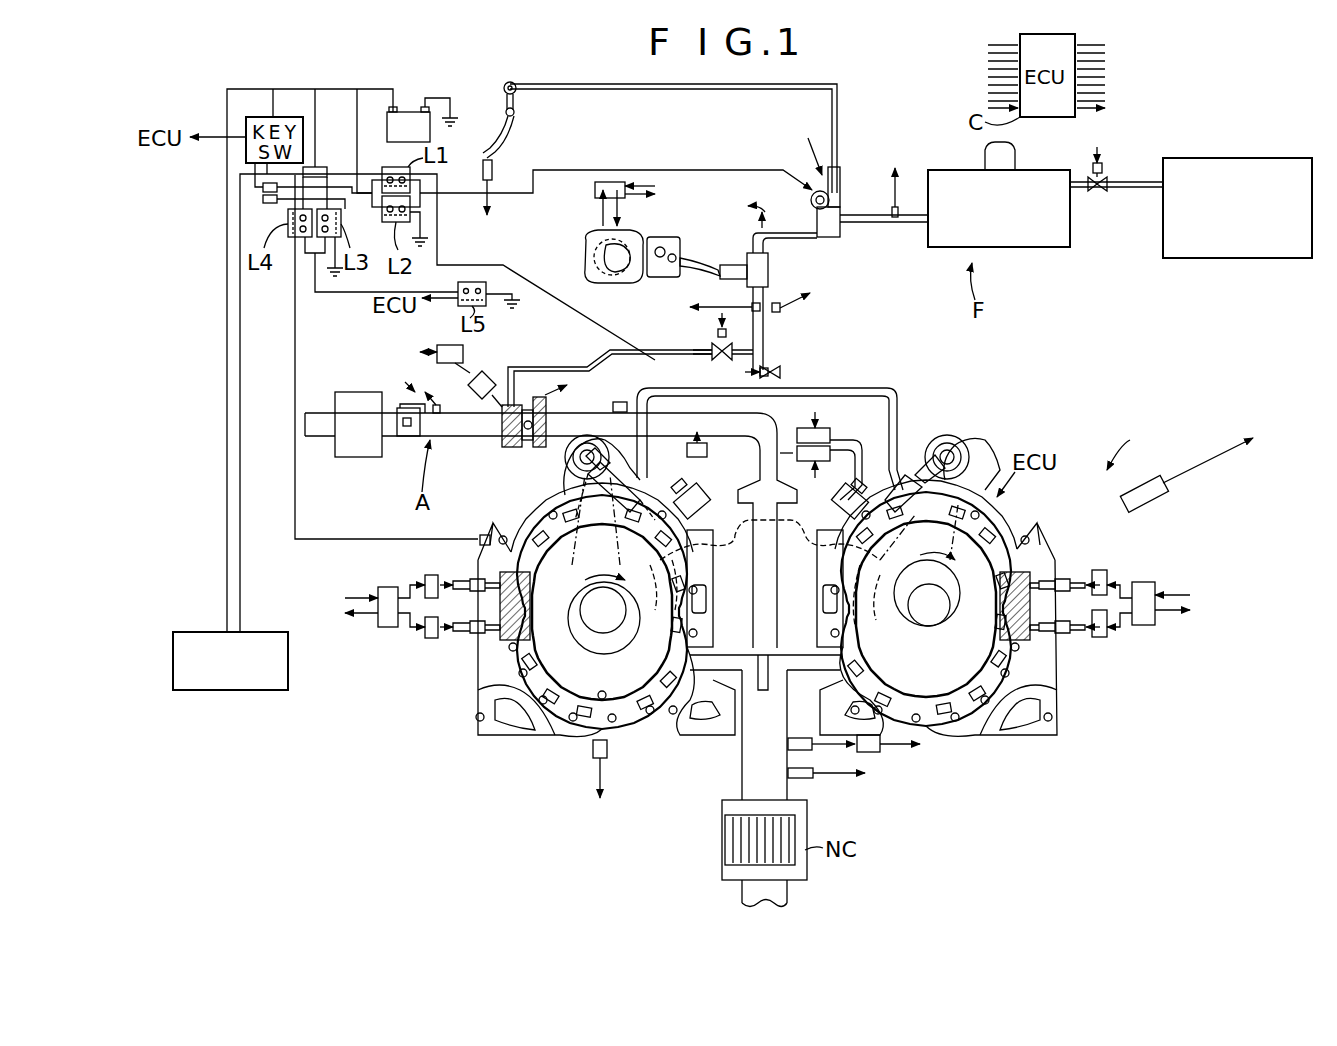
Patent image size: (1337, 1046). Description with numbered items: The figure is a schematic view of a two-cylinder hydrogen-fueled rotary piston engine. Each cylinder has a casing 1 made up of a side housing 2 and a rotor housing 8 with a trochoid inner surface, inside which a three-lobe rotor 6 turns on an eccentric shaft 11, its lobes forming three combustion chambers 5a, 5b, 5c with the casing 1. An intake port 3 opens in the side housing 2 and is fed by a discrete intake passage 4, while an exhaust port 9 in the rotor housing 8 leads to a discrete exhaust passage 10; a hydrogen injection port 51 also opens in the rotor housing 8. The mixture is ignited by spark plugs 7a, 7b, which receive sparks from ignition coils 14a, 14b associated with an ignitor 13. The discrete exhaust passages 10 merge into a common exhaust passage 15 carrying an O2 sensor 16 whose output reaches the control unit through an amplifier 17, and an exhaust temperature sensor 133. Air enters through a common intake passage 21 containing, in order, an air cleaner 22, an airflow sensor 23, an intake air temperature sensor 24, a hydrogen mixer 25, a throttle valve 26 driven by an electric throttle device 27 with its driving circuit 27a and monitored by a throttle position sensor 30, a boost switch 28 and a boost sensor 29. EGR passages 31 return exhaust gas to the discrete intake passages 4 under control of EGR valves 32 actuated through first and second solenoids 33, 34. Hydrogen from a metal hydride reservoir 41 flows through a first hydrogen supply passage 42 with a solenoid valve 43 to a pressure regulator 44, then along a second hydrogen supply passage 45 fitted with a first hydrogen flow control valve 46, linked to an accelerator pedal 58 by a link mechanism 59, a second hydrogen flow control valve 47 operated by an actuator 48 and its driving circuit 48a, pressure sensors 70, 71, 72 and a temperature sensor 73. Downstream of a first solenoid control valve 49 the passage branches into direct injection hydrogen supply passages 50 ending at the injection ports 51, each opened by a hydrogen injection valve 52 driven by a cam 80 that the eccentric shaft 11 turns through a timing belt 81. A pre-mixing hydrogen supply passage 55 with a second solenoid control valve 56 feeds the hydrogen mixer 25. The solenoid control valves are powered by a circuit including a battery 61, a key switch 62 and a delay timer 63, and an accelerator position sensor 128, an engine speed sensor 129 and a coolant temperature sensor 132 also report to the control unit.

The casing 1 is at (478, 533).
The side housing 2 is at (540, 520).
The intake port 3 is at (665, 565).
The discrete intake passage 4 is at (714, 575).
The combustion chamber 5a is at (572, 560).
The combustion chamber 5b is at (495, 680).
The combustion chamber 5c is at (672, 705).
The three-lobe rotor 6 is at (600, 715).
The spark plug 7a is at (486, 582).
The spark plug 7b is at (488, 633).
The rotor housing 8 is at (545, 712).
The exhaust port 9 is at (733, 658).
The discrete exhaust passage 10 is at (768, 655).
The eccentric shaft 11 is at (605, 635).
The ignitor 13 is at (385, 627).
The ignition coil 14a is at (425, 578).
The ignition coil 14b is at (430, 638).
The common exhaust passage 15 is at (742, 740).
The O2 sensor 16 is at (800, 752).
The amplifier 17 is at (880, 720).
The common intake passage 21 is at (470, 436).
The air cleaner 22 is at (358, 457).
The airflow sensor 23 is at (405, 436).
The intake air temperature sensor 24 is at (440, 408).
The hydrogen mixer 25 is at (505, 447).
The throttle valve 26 is at (530, 440).
The electric throttle device 27 is at (486, 375).
The driving circuit 27a is at (455, 330).
The boost switch 28 is at (613, 404).
The boost sensor 29 is at (707, 450).
The throttle position sensor 30 is at (540, 397).
The EGR passage 31 is at (735, 515).
The EGR valve 32 is at (668, 462).
The first solenoid 33 is at (830, 430).
The second solenoid 34 is at (852, 478).
The metal hydride reservoir 41 is at (1185, 260).
The first hydrogen supply passage 42 is at (1140, 188).
The solenoid valve 43 is at (1095, 191).
The pressure regulator 44 is at (1045, 248).
The second hydrogen supply passage 45 is at (890, 223).
The first hydrogen flow control valve 46 is at (835, 237).
The second hydrogen flow control valve 47 is at (768, 272).
The actuator 48 is at (643, 238).
The driving circuit 48a is at (595, 190).
The first solenoid control valve 49 is at (780, 372).
The direct injection hydrogen supply passage 50 is at (660, 395).
The hydrogen injection port 51 is at (616, 570).
The hydrogen injection valve 52 is at (582, 508).
The pre-mixing hydrogen supply passage 55 is at (700, 348).
The second solenoid control valve 56 is at (765, 352).
The accelerator pedal 58 is at (500, 142).
The link mechanism 59 is at (612, 89).
The battery 61 is at (408, 112).
The key switch 62 is at (256, 117).
The delay timer 63 is at (263, 188).
The pressure sensor 70 is at (770, 212).
The pressure sensor 71 is at (890, 210).
The pressure sensor 72 is at (782, 310).
The temperature sensor 73 is at (752, 300).
The cam 80 is at (960, 463).
The timing belt 81 is at (960, 595).
The accelerator position sensor 128 is at (492, 165).
The engine speed sensor 129 is at (1160, 500).
The coolant temperature sensor 132 is at (607, 758).
The exhaust temperature sensor 133 is at (812, 780).